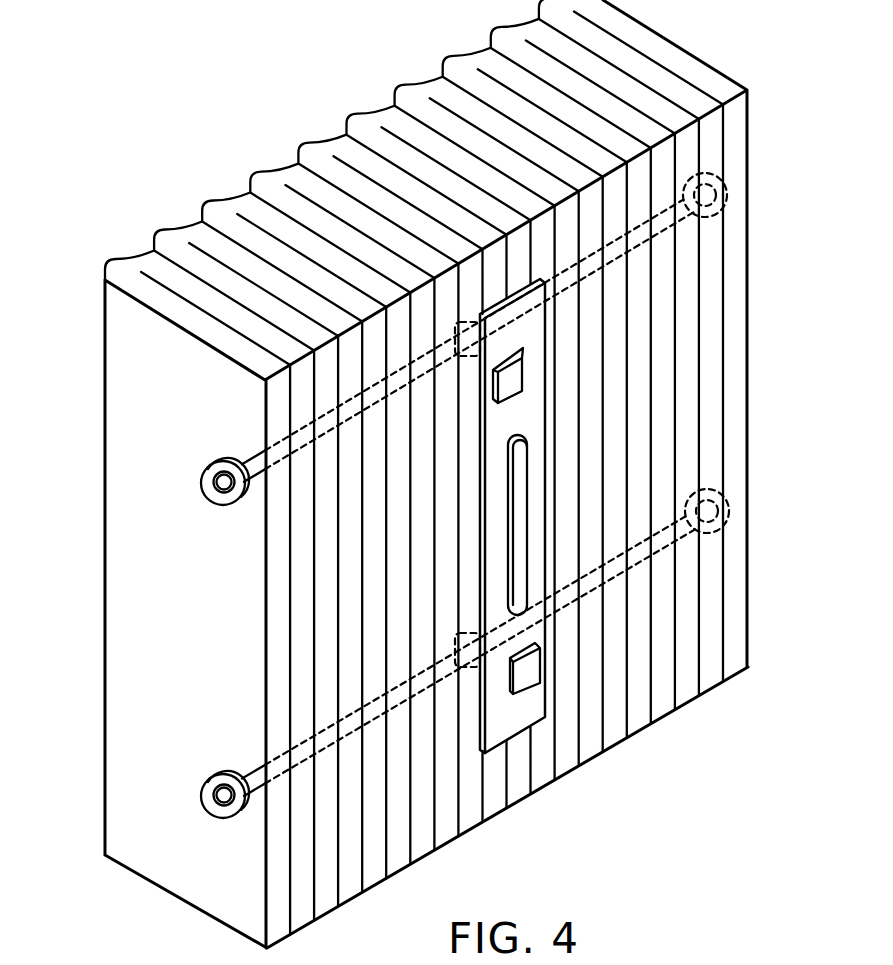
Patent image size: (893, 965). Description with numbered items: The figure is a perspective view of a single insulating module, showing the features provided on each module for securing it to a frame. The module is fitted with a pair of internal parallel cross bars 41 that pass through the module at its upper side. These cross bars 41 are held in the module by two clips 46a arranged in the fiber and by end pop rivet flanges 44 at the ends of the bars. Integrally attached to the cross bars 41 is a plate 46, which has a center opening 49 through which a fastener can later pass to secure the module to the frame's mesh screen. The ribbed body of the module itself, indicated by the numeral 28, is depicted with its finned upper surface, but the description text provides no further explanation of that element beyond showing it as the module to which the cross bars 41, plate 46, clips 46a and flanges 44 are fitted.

The cooling fins of heat sink 28 is at (368, 108).
The cross bar 41 is at (665, 527).
The end pop rivet flange 44 is at (208, 810).
The plate 46 is at (543, 632).
The clip 46a is at (597, 793).
The center opening 49 is at (518, 580).